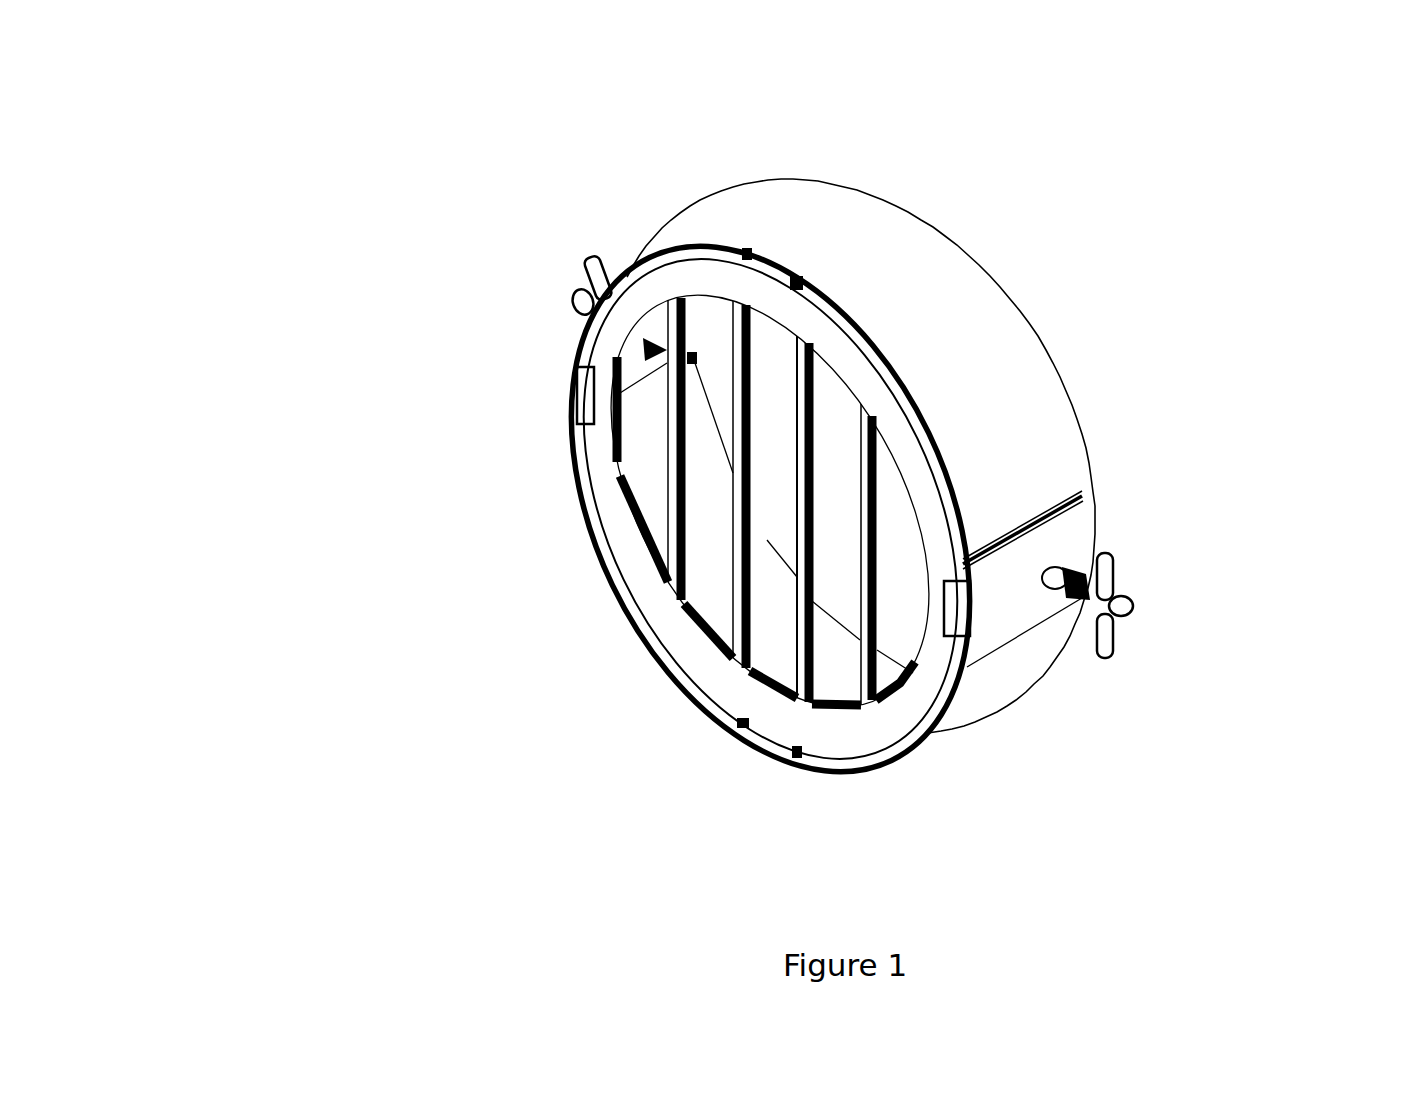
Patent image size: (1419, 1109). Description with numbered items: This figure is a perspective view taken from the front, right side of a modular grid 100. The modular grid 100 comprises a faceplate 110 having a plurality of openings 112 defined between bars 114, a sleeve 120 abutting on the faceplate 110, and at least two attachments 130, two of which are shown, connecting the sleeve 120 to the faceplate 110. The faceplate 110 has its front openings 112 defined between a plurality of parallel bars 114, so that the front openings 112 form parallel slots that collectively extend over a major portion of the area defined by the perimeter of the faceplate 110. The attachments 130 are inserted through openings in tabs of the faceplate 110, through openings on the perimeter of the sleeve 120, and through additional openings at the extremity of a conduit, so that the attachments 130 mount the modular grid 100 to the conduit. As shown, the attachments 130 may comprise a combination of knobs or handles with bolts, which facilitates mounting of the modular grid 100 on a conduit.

The modular grid 100 is at (282, 155).
The faceplate 110 is at (607, 524).
The openings 112 is at (766, 350).
The bars 114 is at (840, 575).
The sleeve 120 is at (932, 372).
The attachments 130 is at (643, 350).